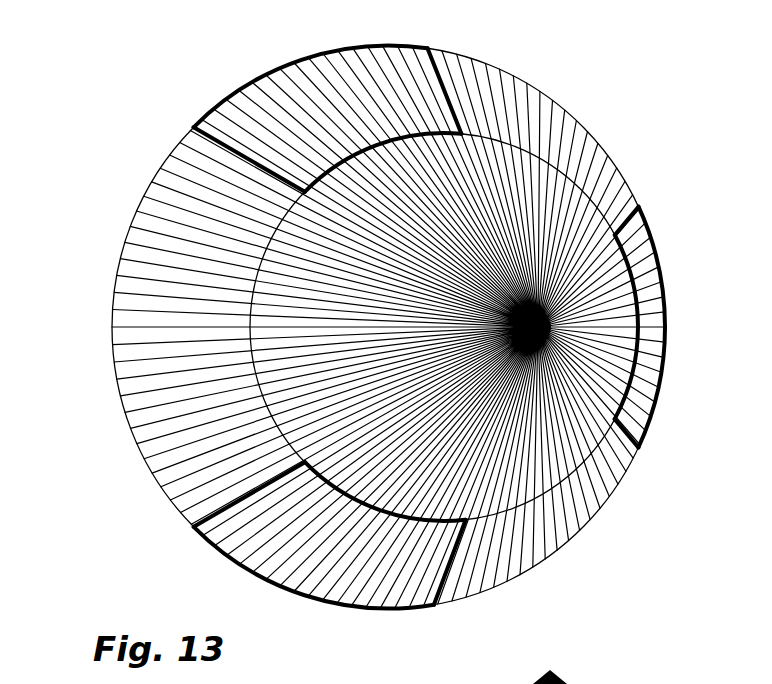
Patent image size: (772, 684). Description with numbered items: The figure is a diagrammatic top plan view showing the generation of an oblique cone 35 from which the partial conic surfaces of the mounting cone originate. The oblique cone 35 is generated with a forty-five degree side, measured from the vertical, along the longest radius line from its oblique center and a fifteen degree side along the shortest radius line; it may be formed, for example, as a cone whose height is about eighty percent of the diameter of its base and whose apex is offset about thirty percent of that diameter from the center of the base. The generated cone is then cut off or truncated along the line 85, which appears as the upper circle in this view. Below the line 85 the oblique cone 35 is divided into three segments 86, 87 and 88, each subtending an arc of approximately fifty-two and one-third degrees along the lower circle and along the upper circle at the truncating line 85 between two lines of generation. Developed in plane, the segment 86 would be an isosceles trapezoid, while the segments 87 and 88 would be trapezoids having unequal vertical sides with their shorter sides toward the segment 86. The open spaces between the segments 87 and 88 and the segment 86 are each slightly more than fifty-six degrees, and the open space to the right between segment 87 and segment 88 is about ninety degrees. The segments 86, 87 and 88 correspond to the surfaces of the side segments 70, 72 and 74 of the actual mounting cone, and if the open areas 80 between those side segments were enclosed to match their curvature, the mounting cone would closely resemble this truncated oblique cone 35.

The oblique cone 35 is at (132, 150).
The side segment 70 is at (677, 327).
The side segment 72 is at (328, 96).
The side segment 74 is at (314, 557).
The open areas 80 is at (172, 328).
The truncating line 85 is at (560, 174).
The segment 86 is at (634, 307).
The segment 87 is at (387, 133).
The segment 88 is at (374, 540).